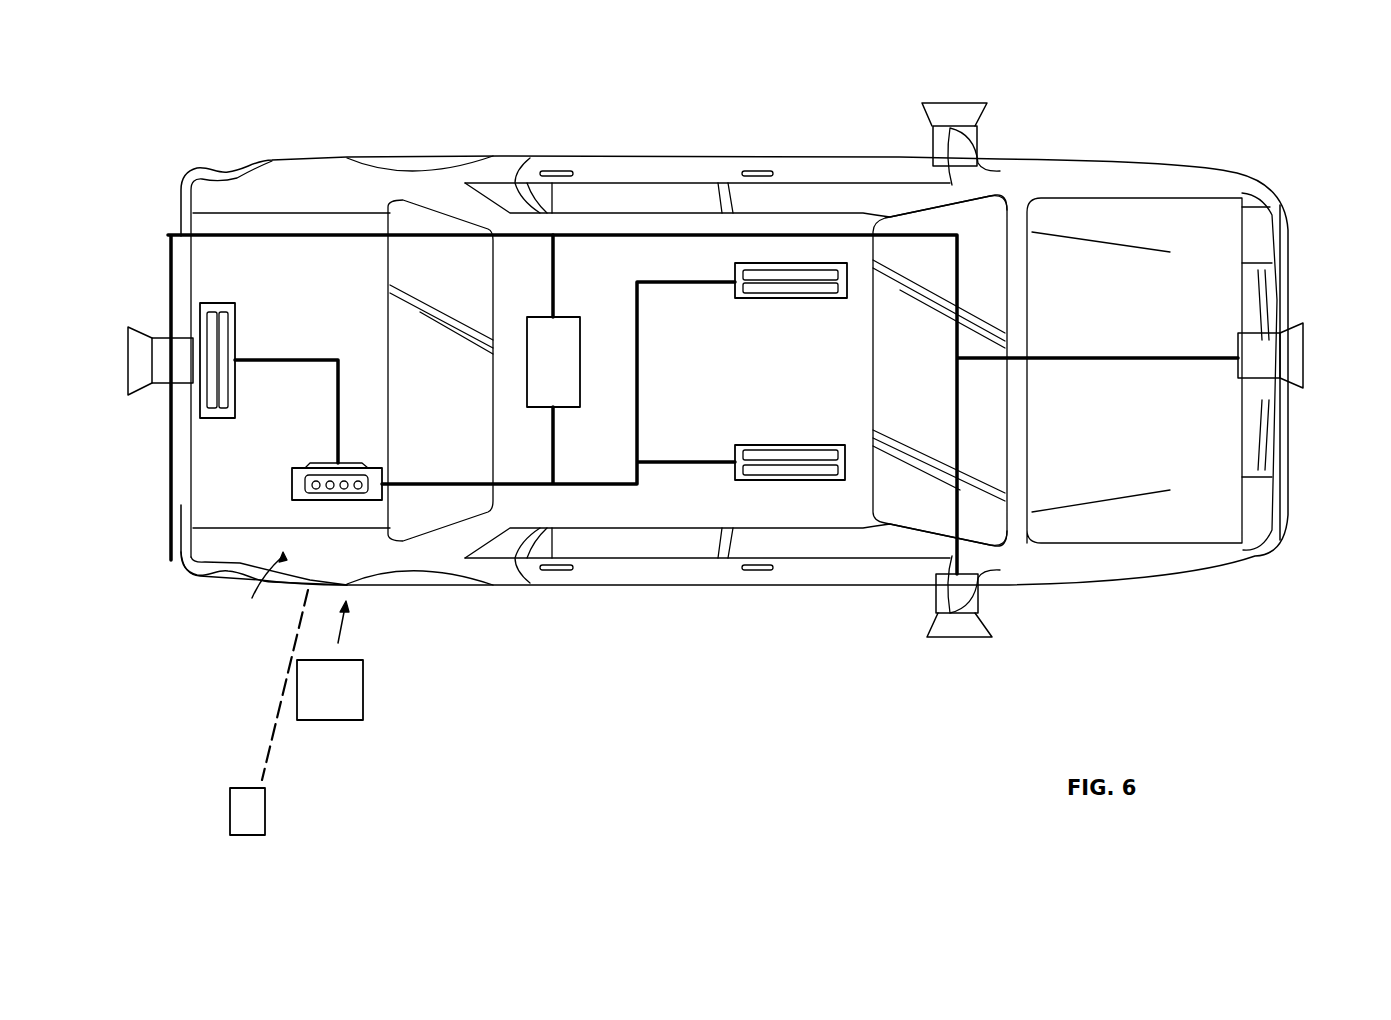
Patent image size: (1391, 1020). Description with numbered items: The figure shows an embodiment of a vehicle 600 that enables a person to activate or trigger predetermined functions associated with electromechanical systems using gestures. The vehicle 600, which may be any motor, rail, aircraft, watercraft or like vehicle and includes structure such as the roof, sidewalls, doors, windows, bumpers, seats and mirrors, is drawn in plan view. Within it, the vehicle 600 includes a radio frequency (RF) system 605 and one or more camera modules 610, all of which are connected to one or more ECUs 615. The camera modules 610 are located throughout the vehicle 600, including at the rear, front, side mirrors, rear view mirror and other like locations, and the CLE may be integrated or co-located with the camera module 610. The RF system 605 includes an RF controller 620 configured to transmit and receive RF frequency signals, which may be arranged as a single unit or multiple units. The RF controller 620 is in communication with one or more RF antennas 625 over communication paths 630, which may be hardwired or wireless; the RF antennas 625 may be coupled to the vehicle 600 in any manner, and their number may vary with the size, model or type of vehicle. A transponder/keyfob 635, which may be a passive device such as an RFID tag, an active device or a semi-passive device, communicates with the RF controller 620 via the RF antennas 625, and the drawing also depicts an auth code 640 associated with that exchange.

The vehicle 600 is at (1098, 158).
The radio frequency (RF) system 605 is at (247, 535).
The camera module 610 is at (707, 366).
The ECU 615 is at (580, 315).
The RF controller 620 is at (345, 462).
The RF antenna 625 is at (237, 331).
The communication path 630 is at (283, 361).
The transponder/keyfob 635 is at (230, 813).
The authentication code 640 is at (363, 694).